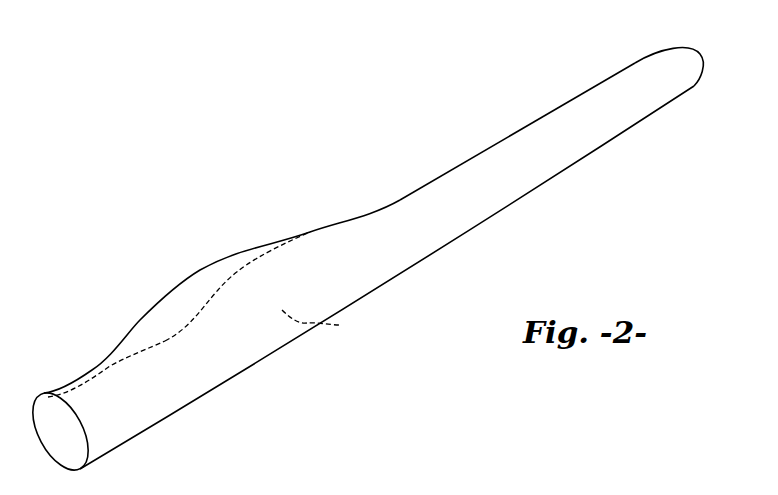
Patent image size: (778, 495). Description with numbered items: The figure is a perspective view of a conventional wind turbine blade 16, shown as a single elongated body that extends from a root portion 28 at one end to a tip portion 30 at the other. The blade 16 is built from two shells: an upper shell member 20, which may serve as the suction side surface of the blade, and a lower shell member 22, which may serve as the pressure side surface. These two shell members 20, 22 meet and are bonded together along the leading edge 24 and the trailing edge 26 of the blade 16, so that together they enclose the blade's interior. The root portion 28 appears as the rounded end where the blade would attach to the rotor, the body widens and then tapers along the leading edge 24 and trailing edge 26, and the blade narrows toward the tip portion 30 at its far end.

The wind turbine blade 16 is at (338, 114).
The upper shell member 20 is at (210, 325).
The lower shell member 22 is at (322, 323).
The leading edge 24 is at (455, 240).
The trailing edge 26 is at (470, 160).
The root portion 28 is at (96, 396).
The tip portion 30 is at (683, 68).